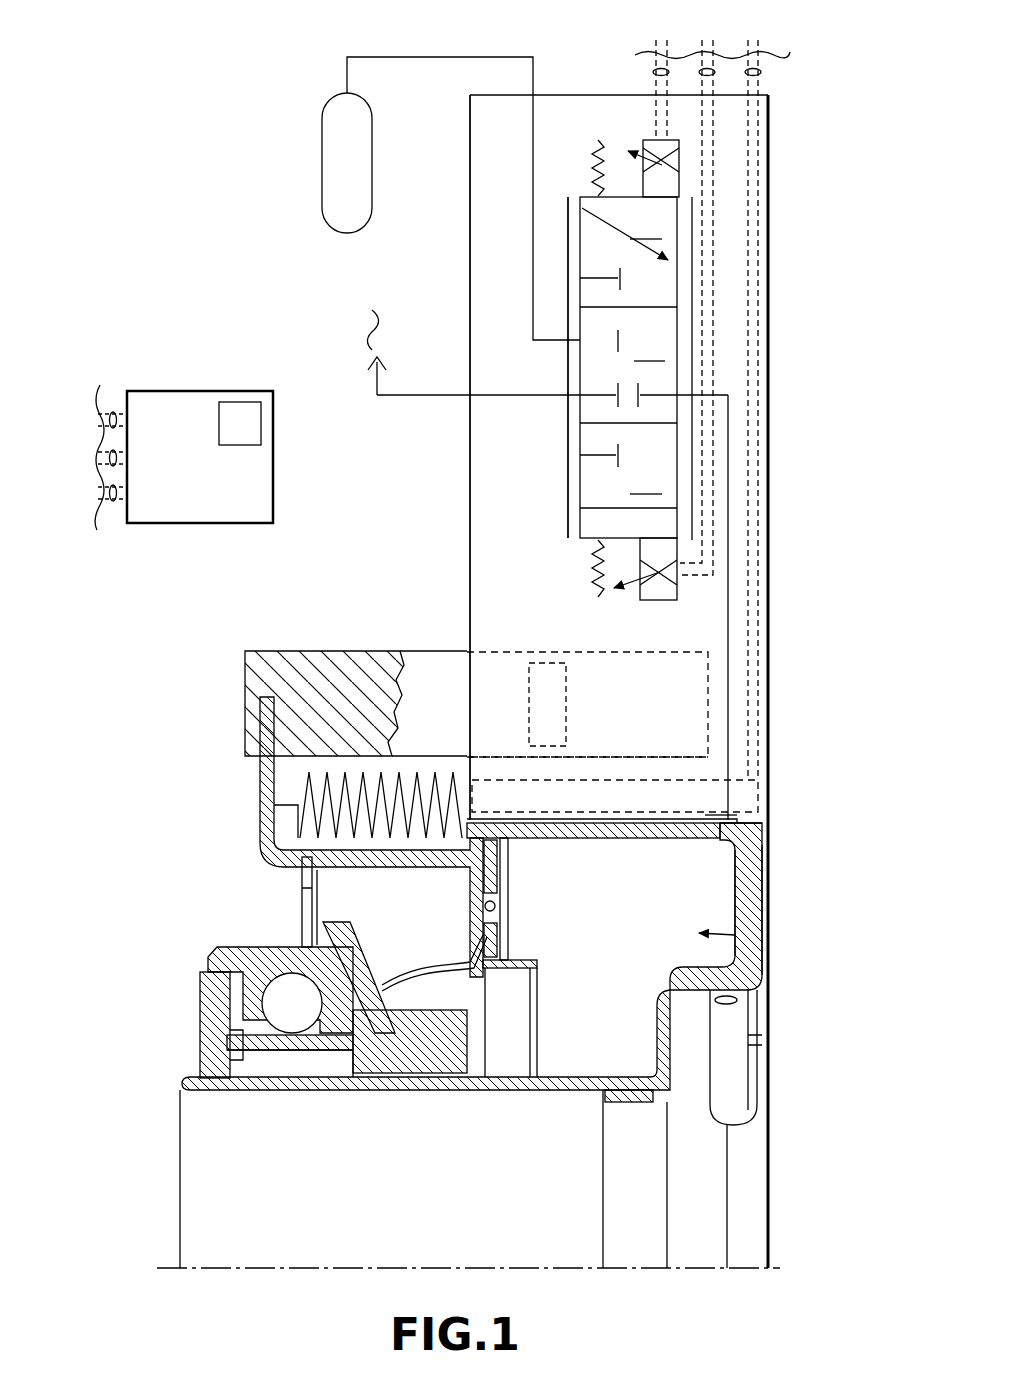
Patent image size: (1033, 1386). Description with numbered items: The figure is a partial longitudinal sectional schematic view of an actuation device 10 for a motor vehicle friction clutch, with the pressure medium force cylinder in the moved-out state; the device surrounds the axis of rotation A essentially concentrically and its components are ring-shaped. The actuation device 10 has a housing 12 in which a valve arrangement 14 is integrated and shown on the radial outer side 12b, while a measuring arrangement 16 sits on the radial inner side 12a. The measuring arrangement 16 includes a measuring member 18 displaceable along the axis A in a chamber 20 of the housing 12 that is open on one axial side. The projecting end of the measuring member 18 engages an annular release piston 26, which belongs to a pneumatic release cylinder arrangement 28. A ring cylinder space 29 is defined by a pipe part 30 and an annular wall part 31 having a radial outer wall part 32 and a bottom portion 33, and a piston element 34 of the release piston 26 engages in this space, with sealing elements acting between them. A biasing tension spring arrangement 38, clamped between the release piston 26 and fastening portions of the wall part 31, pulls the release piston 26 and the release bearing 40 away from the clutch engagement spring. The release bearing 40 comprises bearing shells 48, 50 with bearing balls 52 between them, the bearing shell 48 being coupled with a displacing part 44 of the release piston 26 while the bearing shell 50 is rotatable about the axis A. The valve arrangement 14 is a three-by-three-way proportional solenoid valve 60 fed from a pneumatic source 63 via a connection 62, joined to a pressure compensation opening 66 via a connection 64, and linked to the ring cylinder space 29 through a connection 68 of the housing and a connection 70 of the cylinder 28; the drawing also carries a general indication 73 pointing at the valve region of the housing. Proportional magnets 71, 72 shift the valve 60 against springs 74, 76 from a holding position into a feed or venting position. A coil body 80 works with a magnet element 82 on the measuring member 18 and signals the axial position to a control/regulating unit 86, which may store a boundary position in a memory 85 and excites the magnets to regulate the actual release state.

The actuation device 10 is at (286, 296).
The housing 12 is at (768, 245).
The radial inner side 12a is at (707, 768).
The radial outer side 12b is at (470, 252).
The valve arrangement 14 is at (670, 325).
The measuring arrangement 16 is at (676, 700).
The measuring member 18 is at (256, 652).
The chamber 20 is at (702, 712).
The release piston 26 is at (262, 792).
The release cylinder arrangement 28 is at (737, 957).
The ring cylinder space 29 is at (733, 997).
The pipe part 30 is at (493, 1088).
The annular wall part 31 is at (760, 900).
The radial outer wall part 32 is at (580, 832).
The bottom portion 33 is at (752, 922).
The piston element 34 is at (515, 965).
The biasing tension spring arrangement 38 is at (302, 790).
The release bearing 40 is at (261, 1015).
The displacing part 44 is at (343, 1070).
The bearing shell 48 is at (220, 946).
The bearing shell 50 is at (202, 1003).
The bearing balls 52 is at (296, 1022).
The 3/3-way proportional solenoid valve 60 is at (670, 440).
The connection 62 is at (535, 95).
The pneumatic source 63 is at (325, 126).
The connection 64 is at (445, 397).
The pressure compensation opening 66 is at (390, 367).
The connection 68 is at (733, 832).
The connection 70 is at (745, 842).
The proportional magnet 71 is at (678, 590).
The proportional magnet 72 is at (672, 192).
The valve module 73 is at (792, 225).
The spring 74 is at (592, 578).
The spring 76 is at (594, 152).
The coil body 80 is at (750, 800).
The magnet element 82 is at (570, 692).
The memory 85 is at (257, 425).
The control/regulating unit 86 is at (268, 505).
The axis of rotation A is at (350, 1270).